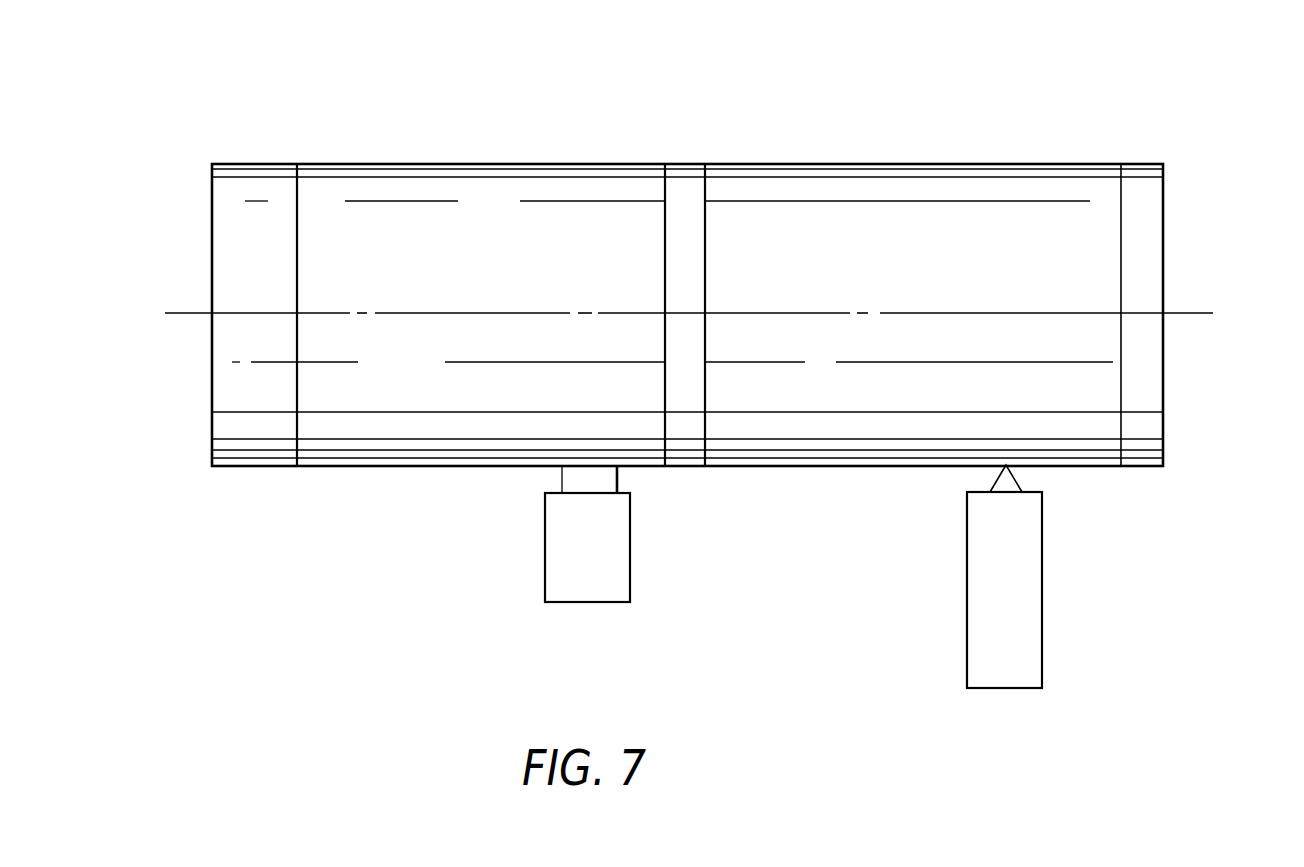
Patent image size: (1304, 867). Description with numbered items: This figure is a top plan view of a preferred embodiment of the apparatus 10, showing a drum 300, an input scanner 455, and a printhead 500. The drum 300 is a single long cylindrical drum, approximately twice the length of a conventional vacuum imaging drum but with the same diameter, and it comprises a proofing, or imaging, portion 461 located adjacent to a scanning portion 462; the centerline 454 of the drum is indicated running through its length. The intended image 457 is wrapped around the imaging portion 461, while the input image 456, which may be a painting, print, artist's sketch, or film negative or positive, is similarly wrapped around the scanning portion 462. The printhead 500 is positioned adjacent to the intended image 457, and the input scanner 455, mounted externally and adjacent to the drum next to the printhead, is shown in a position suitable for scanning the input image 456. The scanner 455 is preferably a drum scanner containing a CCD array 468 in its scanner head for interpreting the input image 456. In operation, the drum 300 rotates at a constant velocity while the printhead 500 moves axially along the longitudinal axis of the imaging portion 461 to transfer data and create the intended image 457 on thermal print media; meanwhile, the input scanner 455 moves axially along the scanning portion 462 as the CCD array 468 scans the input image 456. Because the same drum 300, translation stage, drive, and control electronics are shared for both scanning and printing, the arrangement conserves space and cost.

The apparatus 10 is at (322, 129).
The drum 300 is at (224, 240).
The centerline 454 is at (1188, 308).
The input scanner 455 is at (620, 578).
The input image 456 is at (508, 182).
The intended image 457 is at (912, 183).
The proofing portion 461 is at (797, 145).
The scanning portion 462 is at (624, 149).
The CCD array 468 is at (612, 477).
The printhead 500 is at (1033, 559).